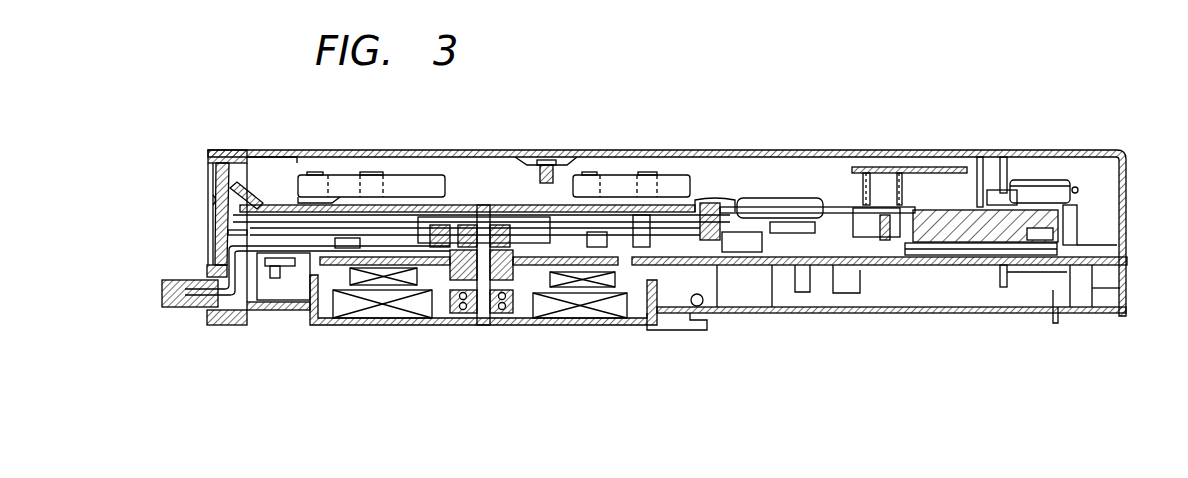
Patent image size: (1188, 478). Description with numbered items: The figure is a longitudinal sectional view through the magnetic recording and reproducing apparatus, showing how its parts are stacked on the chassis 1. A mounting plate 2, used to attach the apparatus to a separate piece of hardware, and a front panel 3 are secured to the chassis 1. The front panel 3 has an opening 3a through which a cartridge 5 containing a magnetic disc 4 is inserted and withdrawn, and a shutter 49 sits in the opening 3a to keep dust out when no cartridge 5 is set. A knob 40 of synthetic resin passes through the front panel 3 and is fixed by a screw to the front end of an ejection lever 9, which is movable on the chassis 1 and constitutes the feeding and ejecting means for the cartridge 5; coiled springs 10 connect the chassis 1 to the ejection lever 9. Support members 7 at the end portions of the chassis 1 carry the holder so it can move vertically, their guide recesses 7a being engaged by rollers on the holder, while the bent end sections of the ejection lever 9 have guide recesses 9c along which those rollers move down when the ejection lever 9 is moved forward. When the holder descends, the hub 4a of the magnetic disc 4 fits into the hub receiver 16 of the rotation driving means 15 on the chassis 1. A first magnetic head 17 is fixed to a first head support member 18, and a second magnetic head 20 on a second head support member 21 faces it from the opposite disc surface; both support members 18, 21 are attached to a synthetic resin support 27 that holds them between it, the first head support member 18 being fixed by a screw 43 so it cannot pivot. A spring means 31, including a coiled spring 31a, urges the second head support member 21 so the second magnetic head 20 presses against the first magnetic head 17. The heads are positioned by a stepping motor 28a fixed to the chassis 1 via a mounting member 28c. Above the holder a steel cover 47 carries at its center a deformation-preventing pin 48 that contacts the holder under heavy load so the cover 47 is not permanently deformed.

The chassis 1 is at (900, 268).
The mounting plate 2 is at (705, 320).
The front panel 3 is at (216, 150).
The opening 3a is at (222, 202).
The magnetic disc 4 is at (567, 217).
The hub 4a is at (527, 213).
The cartridge 5 is at (225, 212).
The support members 7 is at (317, 173).
The guide recesses 7a is at (315, 315).
The ejection lever 9 is at (398, 175).
The guide recesses 9c is at (350, 240).
The coiled springs 10 is at (622, 250).
The rotation driving means 15 is at (432, 298).
The hub receiver 16 is at (510, 233).
The first magnetic head 17 is at (740, 240).
The first head support member 18 is at (920, 247).
The second magnetic head 20 is at (718, 203).
The second head support member 21 is at (807, 202).
The support (carriage) 27 is at (958, 240).
The motor 28a is at (1073, 190).
The mounting member 28c is at (1007, 167).
The spring means 31 is at (923, 168).
The coiled spring 31a is at (860, 187).
The knob 40 is at (162, 302).
The screw 43 is at (913, 240).
The cover 47 is at (1075, 150).
The deformation-preventing pin 48 is at (548, 157).
The shutter 49 is at (258, 198).